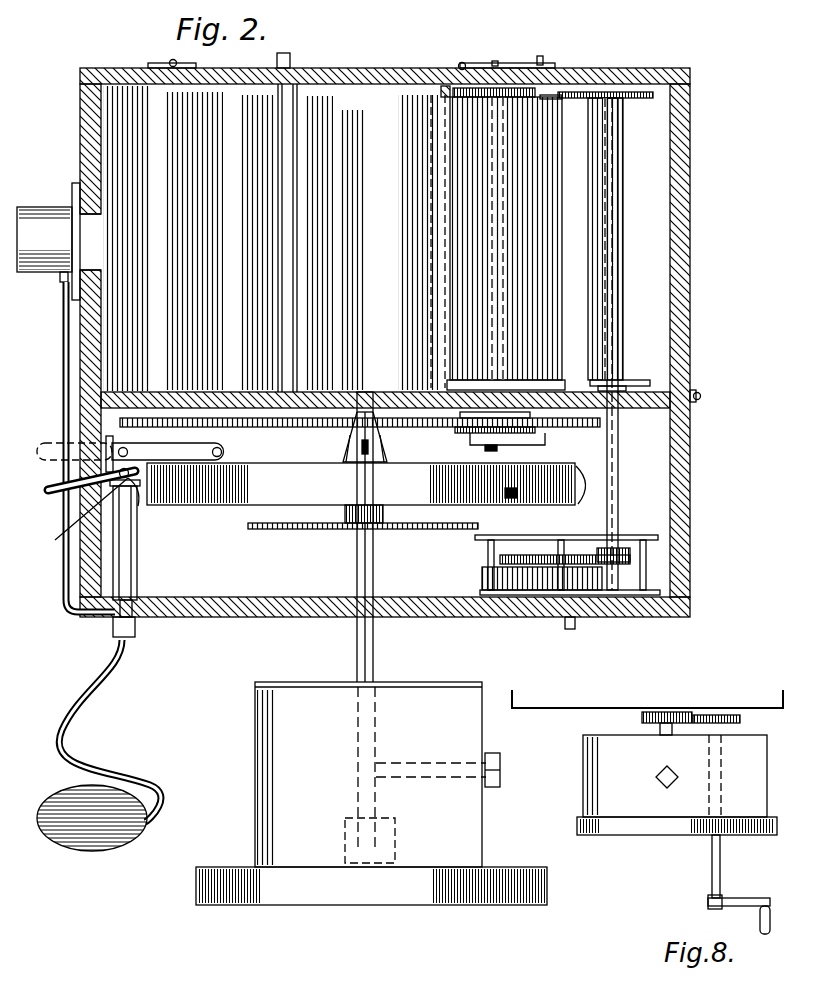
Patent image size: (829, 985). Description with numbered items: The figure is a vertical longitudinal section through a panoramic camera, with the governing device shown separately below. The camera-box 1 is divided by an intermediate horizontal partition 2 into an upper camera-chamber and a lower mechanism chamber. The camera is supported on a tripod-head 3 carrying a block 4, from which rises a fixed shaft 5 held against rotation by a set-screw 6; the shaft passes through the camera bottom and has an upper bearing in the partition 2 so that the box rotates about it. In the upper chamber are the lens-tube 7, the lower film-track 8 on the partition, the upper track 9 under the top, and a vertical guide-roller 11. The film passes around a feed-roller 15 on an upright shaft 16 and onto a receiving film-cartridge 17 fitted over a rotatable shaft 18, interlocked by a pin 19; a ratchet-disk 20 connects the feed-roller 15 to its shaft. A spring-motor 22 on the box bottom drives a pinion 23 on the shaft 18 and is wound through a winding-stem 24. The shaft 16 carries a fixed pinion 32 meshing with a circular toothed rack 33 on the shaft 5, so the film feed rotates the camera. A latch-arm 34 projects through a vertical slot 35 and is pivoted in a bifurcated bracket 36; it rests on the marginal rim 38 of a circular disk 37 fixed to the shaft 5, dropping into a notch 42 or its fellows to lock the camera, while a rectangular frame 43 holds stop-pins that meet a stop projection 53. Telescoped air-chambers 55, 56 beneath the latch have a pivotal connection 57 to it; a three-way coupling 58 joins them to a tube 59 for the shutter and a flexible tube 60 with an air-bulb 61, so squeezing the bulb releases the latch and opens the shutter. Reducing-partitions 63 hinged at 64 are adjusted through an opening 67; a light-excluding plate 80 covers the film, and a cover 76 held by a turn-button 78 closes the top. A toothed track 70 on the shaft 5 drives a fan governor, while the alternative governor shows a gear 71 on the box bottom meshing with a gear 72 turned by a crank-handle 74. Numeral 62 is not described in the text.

In FIG. 2, the camera-box 1 is at (80, 160).
In FIG. 8, the camera-box 1 is at (560, 708).
In FIG. 2, the intermediate horizontal partition 2 is at (182, 386).
In FIG. 2, the tripod-head 3 is at (232, 872).
In FIG. 8, the tripod-head 3 is at (577, 824).
In FIG. 2, the block 4 is at (257, 738).
In FIG. 8, the block 4 is at (583, 760).
In FIG. 2, the fixed shaft 5 is at (376, 582).
In FIG. 8, the fixed shaft 5 is at (665, 735).
In FIG. 2, the set-screw 6 is at (492, 788).
In FIG. 2, the lens-tube 7 is at (35, 280).
In FIG. 2, the lower film-track 8 is at (447, 384).
In FIG. 2, the upper track 9 is at (447, 86).
In FIG. 2, the vertical guide-roller 11 is at (449, 178).
In FIG. 2, the feed-roller 15 is at (550, 96).
In FIG. 2, the upright shaft 16 is at (500, 63).
In FIG. 2, the film-cartridge 17 is at (622, 264).
In FIG. 2, the rotatable shaft 18 is at (612, 92).
In FIG. 2, the pin 19 is at (630, 380).
In FIG. 2, the ratchet-disk 20 is at (465, 63).
In FIG. 2, the spring-motor 22 is at (538, 585).
In FIG. 2, the pinion 23 is at (622, 550).
In FIG. 2, the winding-stem 24 is at (576, 628).
In FIG. 2, the fixed pinion 32 is at (462, 434).
In FIG. 2, the circular toothed rack 33 is at (287, 428).
In FIG. 2, the latch-arm 34 is at (62, 490).
In FIG. 2, the vertical slot 35 is at (70, 462).
In FIG. 2, the bifurcated bracket 36 is at (106, 442).
In FIG. 2, the circular disk 37 is at (236, 506).
In FIG. 2, the marginal rim 38 is at (578, 506).
In FIG. 2, the notch 42 is at (356, 468).
In FIG. 8, the rectangular frame 43 is at (720, 864).
In FIG. 2, the stop projection 53 is at (508, 500).
In FIG. 2, the air-chamber 55 is at (80, 518).
In FIG. 2, the air-chamber 56 is at (138, 549).
In FIG. 2, the pivotal connection 57 is at (140, 508).
In FIG. 2, the three-way coupling 58 is at (136, 632).
In FIG. 2, the tube 59 is at (63, 578).
In FIG. 2, the flexible tube 60 is at (98, 696).
In FIG. 2, the air-bulb 61 is at (95, 851).
In FIG. 2, the curtain 62 is at (218, 213).
In FIG. 2, the reducing-partition 63 is at (339, 242).
In FIG. 2, the hinge 64 is at (297, 224).
In FIG. 2, the opening 67 is at (290, 66).
In FIG. 2, the fixed toothed track 70 is at (300, 530).
In FIG. 8, the gear 71 is at (642, 718).
In FIG. 8, the gear 72 is at (740, 719).
In FIG. 8, the crank-handle 74 is at (765, 936).
In FIG. 2, the metallic cover 76 is at (498, 61).
In FIG. 2, the turn-button 78 is at (543, 58).
In FIG. 2, the light-excluding plate 80 is at (445, 284).